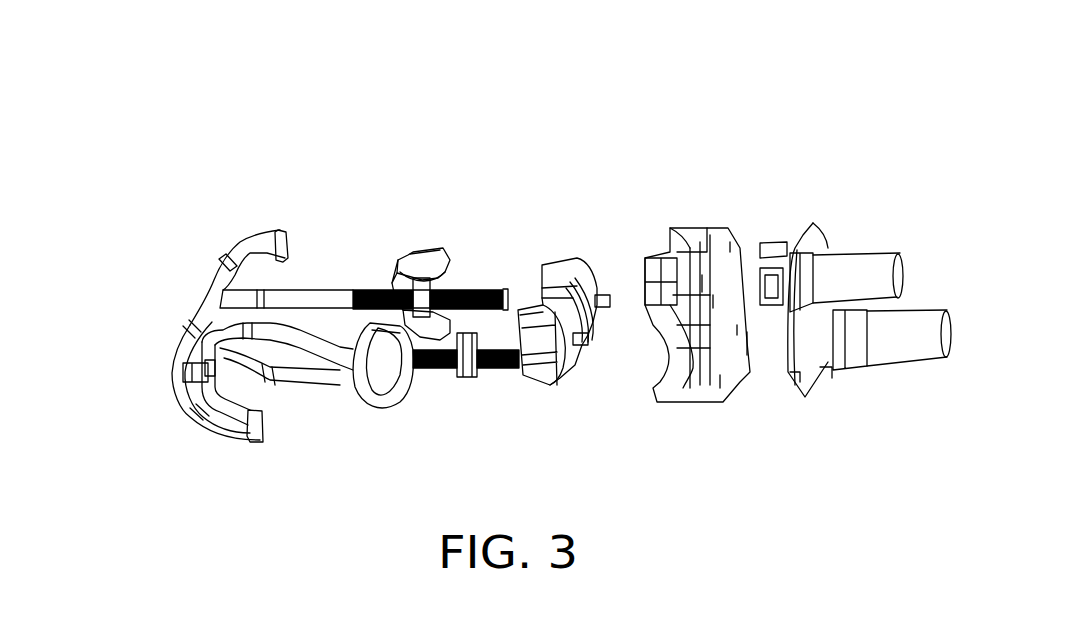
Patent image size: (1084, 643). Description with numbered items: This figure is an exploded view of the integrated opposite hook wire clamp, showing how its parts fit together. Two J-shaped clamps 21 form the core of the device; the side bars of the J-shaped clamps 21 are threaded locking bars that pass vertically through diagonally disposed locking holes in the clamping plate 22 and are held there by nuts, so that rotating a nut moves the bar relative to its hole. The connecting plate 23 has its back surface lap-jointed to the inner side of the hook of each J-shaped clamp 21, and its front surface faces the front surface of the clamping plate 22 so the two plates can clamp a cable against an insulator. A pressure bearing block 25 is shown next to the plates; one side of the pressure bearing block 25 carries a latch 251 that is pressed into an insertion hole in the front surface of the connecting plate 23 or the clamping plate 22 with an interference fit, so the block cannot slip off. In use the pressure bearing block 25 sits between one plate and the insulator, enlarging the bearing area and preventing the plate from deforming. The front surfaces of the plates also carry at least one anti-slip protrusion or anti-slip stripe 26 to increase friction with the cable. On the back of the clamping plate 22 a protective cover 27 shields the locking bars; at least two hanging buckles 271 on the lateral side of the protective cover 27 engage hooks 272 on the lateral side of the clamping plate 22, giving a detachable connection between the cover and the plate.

The J-shaped clamp 21 is at (197, 310).
The clamping plate 22 is at (712, 222).
The connecting plate 23 is at (420, 248).
The pressure bearing block 25 is at (560, 252).
The latch 251 is at (585, 345).
The anti-slip protrusion or anti-slip stripe 26 is at (412, 375).
The protective cover 27 is at (825, 320).
The hanging buckle 271 is at (776, 272).
The hook 272 is at (678, 268).